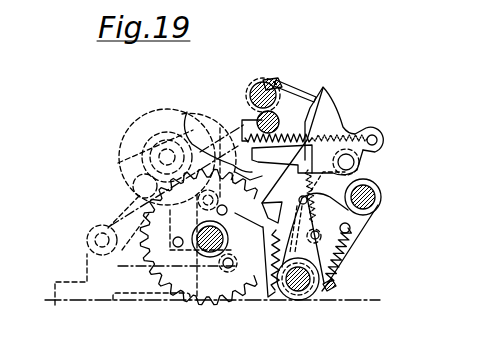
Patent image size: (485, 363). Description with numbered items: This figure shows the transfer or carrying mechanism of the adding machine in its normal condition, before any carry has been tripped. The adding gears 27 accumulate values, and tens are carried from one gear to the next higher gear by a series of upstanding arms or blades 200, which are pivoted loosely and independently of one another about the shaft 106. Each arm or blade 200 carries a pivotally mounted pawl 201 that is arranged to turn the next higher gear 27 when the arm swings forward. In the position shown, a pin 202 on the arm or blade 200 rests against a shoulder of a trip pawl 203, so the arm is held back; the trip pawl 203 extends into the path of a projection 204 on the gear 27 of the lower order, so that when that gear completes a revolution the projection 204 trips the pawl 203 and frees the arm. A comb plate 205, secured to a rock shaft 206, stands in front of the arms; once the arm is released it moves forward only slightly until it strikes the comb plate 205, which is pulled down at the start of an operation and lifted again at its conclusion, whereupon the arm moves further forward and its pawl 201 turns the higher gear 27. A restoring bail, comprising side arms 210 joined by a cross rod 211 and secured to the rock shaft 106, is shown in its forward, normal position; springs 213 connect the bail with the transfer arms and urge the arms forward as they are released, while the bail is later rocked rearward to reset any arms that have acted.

The adding gear 27 is at (174, 278).
The shaft 106 is at (300, 292).
The arm or blade 200 is at (345, 121).
The pawl 201 is at (334, 119).
The pin 202 is at (338, 260).
The trip pawl 203 is at (358, 222).
The projection 204 is at (205, 302).
The comb plate 205 is at (297, 72).
The rock shaft 206 is at (252, 86).
The side arm 210 is at (196, 108).
The cross rod 211 is at (250, 116).
The spring 213 is at (385, 123).